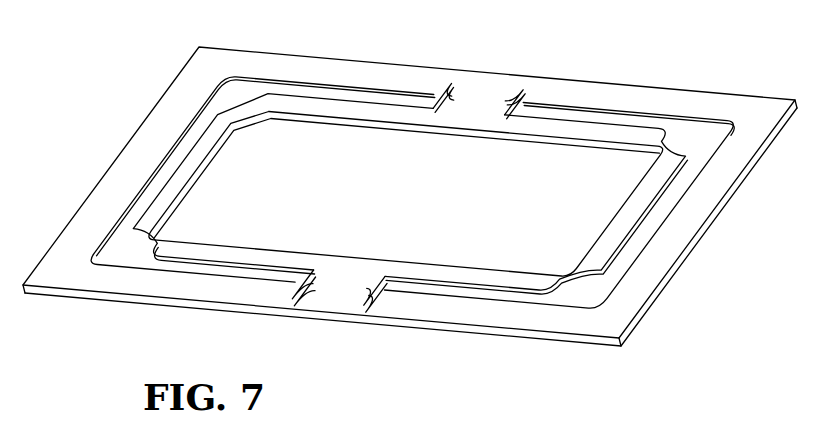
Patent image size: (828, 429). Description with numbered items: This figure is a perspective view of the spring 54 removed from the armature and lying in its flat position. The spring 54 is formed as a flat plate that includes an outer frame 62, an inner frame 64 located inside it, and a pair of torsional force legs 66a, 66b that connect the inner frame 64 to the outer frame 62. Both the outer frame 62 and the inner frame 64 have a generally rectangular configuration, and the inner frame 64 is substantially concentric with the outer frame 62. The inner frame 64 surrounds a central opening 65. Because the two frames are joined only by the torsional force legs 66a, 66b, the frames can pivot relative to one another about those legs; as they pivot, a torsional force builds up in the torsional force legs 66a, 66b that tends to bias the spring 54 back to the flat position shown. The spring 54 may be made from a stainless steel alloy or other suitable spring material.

The spring 54 is at (353, 70).
The outer frame 62 is at (590, 95).
The inner frame 64 is at (375, 112).
The central opening 65 is at (452, 228).
The torsional force leg 66a is at (355, 290).
The torsional force leg 66b is at (491, 100).